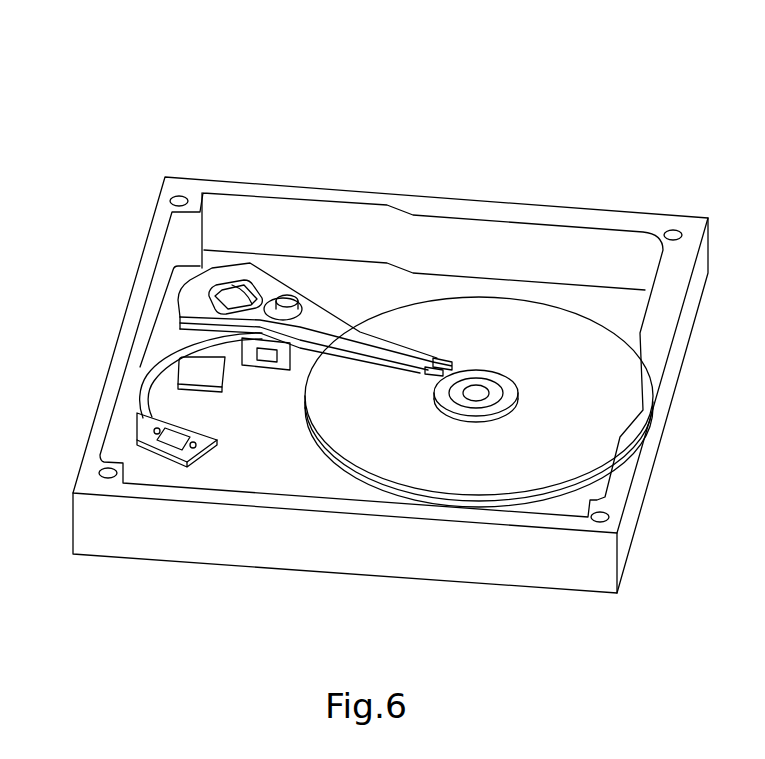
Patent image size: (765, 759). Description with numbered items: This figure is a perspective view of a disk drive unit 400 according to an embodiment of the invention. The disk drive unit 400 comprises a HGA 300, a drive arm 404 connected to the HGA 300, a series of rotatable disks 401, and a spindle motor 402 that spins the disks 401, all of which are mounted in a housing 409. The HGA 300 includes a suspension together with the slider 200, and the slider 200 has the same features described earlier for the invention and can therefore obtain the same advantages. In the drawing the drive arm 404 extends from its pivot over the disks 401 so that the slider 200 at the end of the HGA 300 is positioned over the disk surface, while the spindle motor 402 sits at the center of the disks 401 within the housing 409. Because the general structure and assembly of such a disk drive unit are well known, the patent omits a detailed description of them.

The disk drive unit 400 is at (62, 41).
The drive arm 404 is at (312, 308).
The HGA 300 is at (378, 343).
The slider 200 is at (445, 356).
The spindle motor 402 is at (477, 390).
The rotatable disks 401 is at (552, 337).
The housing 409 is at (639, 258).